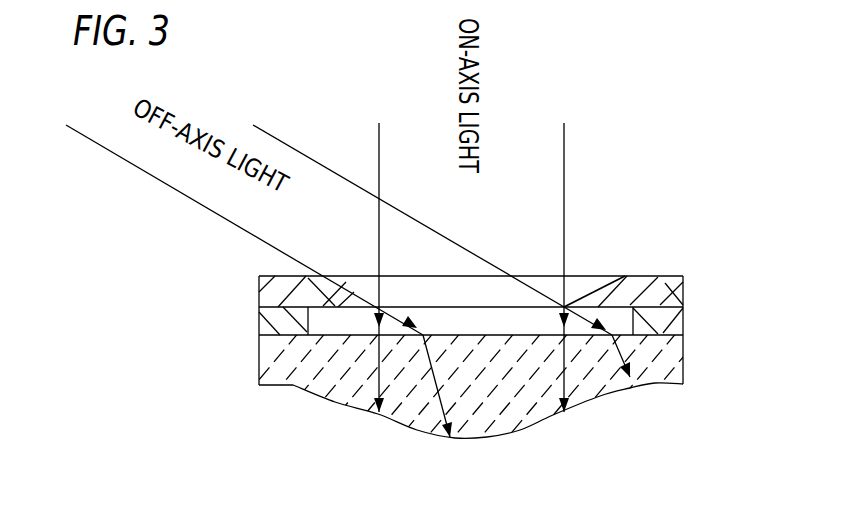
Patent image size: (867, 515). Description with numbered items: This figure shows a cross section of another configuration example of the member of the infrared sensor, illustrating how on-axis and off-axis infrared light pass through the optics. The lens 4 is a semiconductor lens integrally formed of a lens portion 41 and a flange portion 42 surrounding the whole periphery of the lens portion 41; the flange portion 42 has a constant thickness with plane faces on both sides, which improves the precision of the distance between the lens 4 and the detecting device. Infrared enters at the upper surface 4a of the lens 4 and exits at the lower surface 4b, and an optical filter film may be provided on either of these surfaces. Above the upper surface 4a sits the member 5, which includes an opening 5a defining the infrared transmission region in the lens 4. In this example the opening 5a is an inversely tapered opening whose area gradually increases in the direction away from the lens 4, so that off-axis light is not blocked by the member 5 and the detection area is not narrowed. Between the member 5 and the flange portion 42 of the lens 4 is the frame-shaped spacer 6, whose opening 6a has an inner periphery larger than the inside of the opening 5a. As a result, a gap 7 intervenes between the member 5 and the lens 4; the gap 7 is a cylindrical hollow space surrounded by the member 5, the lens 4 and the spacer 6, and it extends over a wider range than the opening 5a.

The lens 4 is at (658, 368).
The upper surface 4a is at (498, 335).
The lower surface 4b is at (537, 425).
The lens portion 41 is at (522, 350).
The flange portion 42 is at (667, 353).
The member 5 is at (665, 283).
The opening 5a is at (447, 295).
The spacer 6 is at (662, 319).
The opening 6a is at (615, 318).
The gap 7 is at (472, 320).